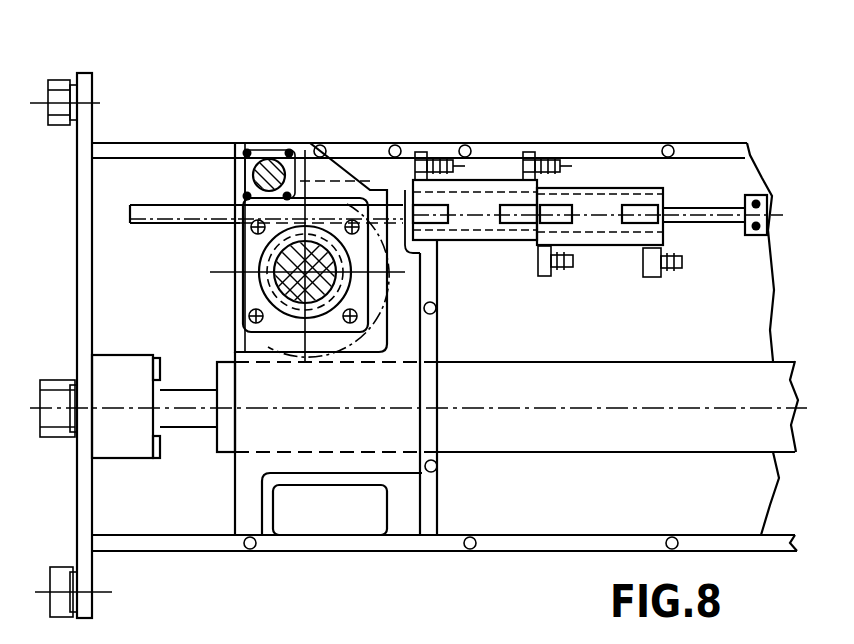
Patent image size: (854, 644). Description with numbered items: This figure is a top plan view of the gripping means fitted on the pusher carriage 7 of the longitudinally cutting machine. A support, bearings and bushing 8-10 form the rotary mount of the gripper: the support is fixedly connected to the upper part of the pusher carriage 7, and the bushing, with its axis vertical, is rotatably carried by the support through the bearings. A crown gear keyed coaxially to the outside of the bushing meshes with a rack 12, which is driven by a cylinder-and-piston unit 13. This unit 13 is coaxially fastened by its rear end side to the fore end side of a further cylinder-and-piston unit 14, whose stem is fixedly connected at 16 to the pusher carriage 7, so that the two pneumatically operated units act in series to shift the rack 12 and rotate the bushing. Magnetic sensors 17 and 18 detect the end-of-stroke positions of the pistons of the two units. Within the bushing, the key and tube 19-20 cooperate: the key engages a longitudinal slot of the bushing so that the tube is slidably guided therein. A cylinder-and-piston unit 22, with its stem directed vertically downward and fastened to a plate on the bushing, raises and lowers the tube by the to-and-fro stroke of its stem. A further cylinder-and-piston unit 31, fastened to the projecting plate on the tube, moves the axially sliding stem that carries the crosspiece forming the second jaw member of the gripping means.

The pusher carriage 7 is at (127, 143).
The rack 12 is at (189, 212).
The cylinder-and-piston unit 22 is at (274, 157).
The cylinder-and-piston unit 13 is at (490, 187).
The further cylinder-and-piston unit 14 is at (601, 190).
The fixed connection 16 is at (762, 196).
The magnetic sensor 17 is at (475, 264).
The magnetic sensor 18 is at (600, 267).
The cylinder-and-piston unit 31 is at (273, 258).
The support, bearings and bushing 8-10 is at (263, 283).
The key and tube 19-20 is at (154, 388).